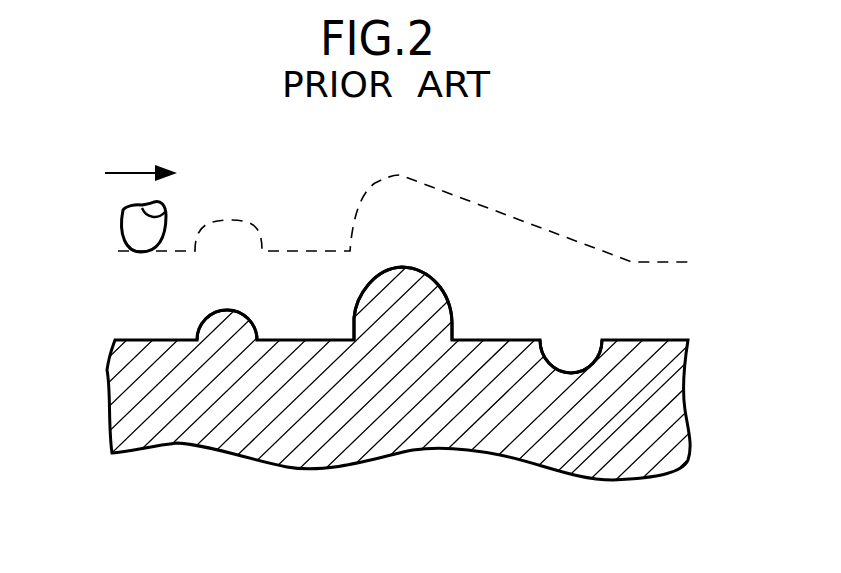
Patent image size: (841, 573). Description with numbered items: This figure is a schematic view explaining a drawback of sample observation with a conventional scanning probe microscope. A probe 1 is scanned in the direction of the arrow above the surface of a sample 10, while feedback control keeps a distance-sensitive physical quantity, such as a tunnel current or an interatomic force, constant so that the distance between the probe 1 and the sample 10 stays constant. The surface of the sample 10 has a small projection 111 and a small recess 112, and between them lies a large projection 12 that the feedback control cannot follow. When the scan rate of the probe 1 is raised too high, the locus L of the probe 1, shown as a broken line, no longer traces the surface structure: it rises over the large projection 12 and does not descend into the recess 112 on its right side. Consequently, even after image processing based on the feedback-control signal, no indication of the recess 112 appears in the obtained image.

The probe 1 is at (140, 232).
The sample 10 is at (405, 427).
The small projection 111 is at (225, 333).
The small recess 112 is at (567, 358).
The large projection 12 is at (408, 300).
The locus L is at (635, 260).